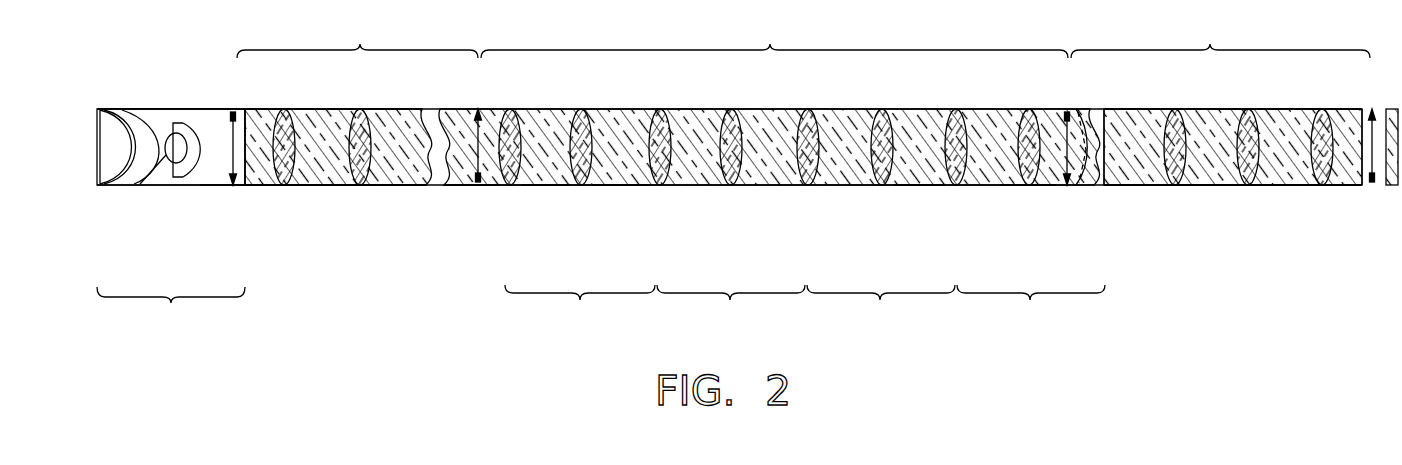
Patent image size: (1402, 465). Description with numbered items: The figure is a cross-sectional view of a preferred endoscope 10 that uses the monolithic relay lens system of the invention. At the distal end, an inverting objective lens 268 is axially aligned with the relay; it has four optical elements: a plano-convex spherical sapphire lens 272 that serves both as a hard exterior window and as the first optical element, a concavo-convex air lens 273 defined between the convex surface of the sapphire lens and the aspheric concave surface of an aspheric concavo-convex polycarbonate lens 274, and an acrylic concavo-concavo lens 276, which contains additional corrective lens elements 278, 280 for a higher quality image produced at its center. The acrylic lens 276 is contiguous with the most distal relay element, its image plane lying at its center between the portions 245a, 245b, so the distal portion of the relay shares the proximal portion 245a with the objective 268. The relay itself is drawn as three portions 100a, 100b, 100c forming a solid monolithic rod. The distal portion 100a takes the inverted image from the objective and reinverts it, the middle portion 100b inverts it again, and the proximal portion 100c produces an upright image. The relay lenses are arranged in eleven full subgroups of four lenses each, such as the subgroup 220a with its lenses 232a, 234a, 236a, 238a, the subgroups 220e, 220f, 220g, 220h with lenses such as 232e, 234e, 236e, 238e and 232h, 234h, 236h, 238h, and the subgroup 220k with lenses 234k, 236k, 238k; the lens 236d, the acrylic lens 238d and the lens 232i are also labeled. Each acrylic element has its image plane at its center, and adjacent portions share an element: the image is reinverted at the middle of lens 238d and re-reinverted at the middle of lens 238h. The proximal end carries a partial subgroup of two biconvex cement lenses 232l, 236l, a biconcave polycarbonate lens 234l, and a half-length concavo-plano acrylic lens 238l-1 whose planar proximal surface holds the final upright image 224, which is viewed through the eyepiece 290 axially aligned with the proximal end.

The endoscope 10 is at (545, 28).
The distal portion 100a is at (357, 36).
The middle portion 100b is at (774, 36).
The proximal portion 100c is at (1220, 36).
The image 224 is at (1347, 114).
The eyepiece 290 is at (1389, 108).
The objective lens 268 is at (171, 312).
The plano-convex spherical sapphire lens 272 is at (108, 111).
The concavo-convex air lens 273 is at (128, 111).
The aspheric concavo-convex polycarbonate lens 274 is at (147, 114).
The acrylic concavo-concavo lens 276 is at (201, 109).
The corrective lens element 278 is at (140, 184).
The corrective lens element 280 is at (185, 184).
The proximal portion of lens element 245a is at (262, 186).
The distal portion of lens element 245b is at (221, 186).
The relay lens 232a is at (294, 186).
The relay lens 234a is at (320, 186).
The relay lens 236a is at (380, 186).
The acrylic lens element 238a is at (418, 186).
The relay lens subgroup 220a is at (362, 198).
The relay lens 236d is at (453, 186).
The acrylic lens element 238d is at (496, 186).
The relay lens 232e is at (527, 186).
The relay lens 234e is at (564, 186).
The relay lens 236e is at (605, 186).
The acrylic lens element 238e is at (640, 186).
The relay lens subgroup 220e is at (580, 311).
The relay lens subgroup 220f is at (731, 311).
The relay lens subgroup 220g is at (881, 310).
The relay lens subgroup 220h is at (1031, 309).
The relay lens 232h is at (945, 186).
The relay lens 234h is at (1000, 186).
The relay lens 236h is at (1023, 186).
The acrylic lens element 238h is at (1073, 186).
The relay lens 232i is at (1093, 183).
The relay lens subgroup 220k is at (1157, 256).
The relay lens 234k is at (1156, 186).
The relay lens 236k is at (1183, 186).
The acrylic lens element 238k is at (1210, 186).
The biconvex cement lens 232l is at (1263, 186).
The biconcave polycarbonate lens 234l is at (1294, 186).
The biconvex cement lens 236l is at (1328, 186).
The concavo-plano acrylic lens 238l-1 is at (1352, 186).